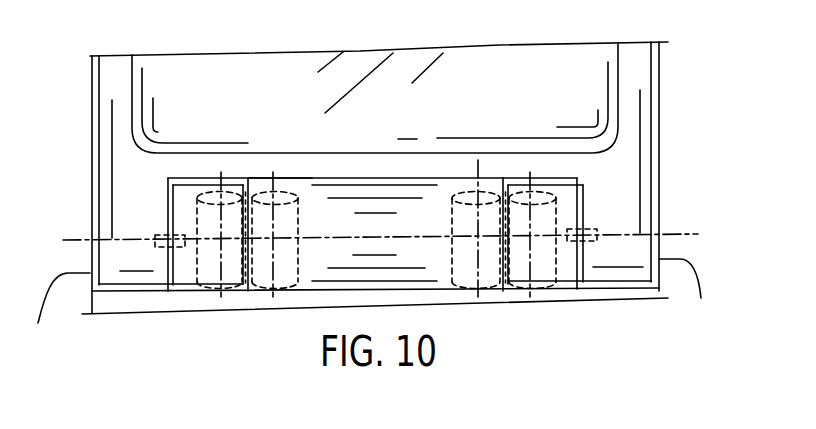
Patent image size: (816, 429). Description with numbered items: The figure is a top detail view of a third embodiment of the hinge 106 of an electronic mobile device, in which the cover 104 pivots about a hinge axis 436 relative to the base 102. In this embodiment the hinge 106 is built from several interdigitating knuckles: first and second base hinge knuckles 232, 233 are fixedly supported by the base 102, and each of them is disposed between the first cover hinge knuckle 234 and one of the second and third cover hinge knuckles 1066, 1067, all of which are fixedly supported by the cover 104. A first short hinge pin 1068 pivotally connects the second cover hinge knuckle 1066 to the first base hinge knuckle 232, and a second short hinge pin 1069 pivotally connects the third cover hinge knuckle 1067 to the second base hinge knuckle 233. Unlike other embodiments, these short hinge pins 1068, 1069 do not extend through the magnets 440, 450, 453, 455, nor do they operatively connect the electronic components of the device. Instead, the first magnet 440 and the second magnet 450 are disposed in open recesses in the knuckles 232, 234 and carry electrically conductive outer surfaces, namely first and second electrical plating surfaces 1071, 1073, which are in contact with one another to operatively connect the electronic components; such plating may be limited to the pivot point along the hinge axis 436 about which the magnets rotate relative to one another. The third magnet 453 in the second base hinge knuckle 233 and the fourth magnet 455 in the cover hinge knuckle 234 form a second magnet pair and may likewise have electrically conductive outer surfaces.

The base 102 is at (375, 332).
The cover 104 is at (411, 177).
The hinge 106 is at (409, 199).
The first base hinge knuckle 232 is at (302, 234).
The second base hinge knuckle 233 is at (521, 209).
The cover hinge knuckle 234 is at (375, 327).
The hinge axis 436 is at (376, 187).
The first magnet 440 is at (196, 263).
The second magnet 450 is at (280, 136).
The third magnet 453 is at (489, 265).
The fourth magnet 455 is at (504, 188).
The second cover hinge knuckle 1066 is at (56, 313).
The third cover hinge knuckle 1067 is at (689, 294).
The first short hinge pin 1068 is at (135, 301).
The second short hinge pin 1069 is at (611, 288).
The first electrical plating surface 1071 is at (250, 259).
The second electrical plating surface 1073 is at (241, 197).